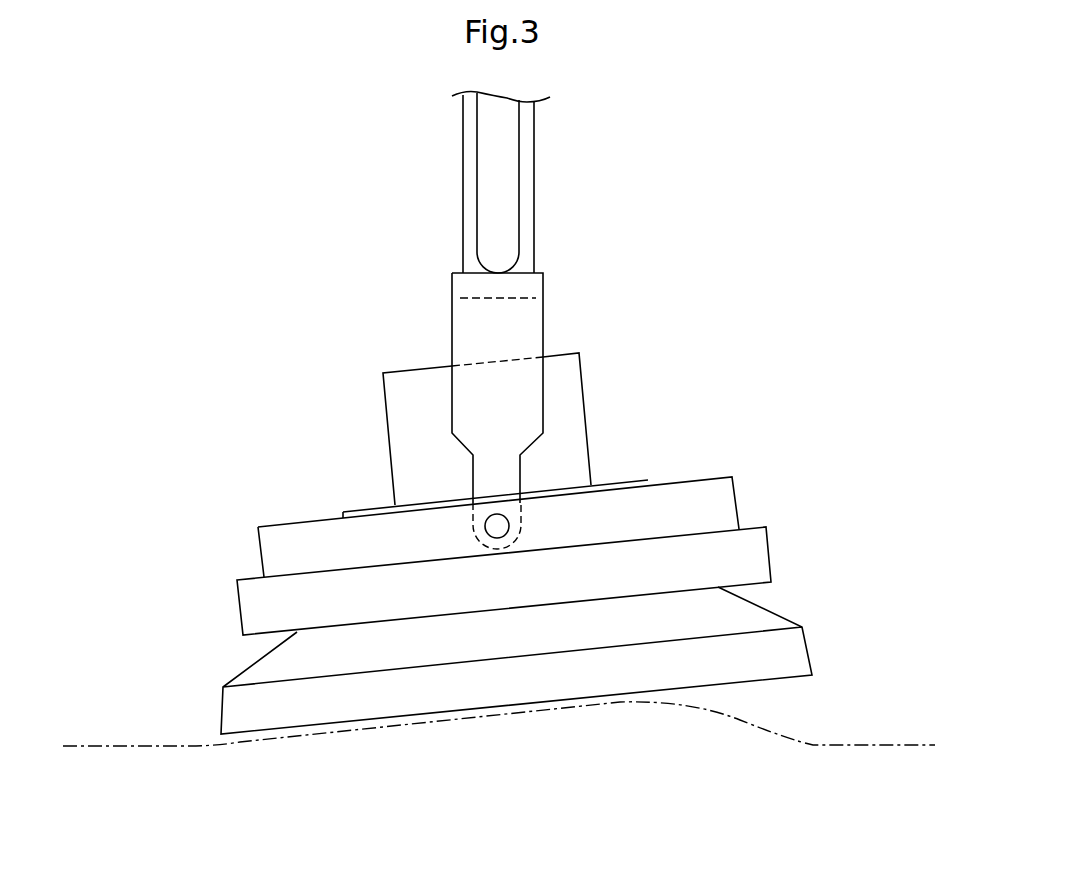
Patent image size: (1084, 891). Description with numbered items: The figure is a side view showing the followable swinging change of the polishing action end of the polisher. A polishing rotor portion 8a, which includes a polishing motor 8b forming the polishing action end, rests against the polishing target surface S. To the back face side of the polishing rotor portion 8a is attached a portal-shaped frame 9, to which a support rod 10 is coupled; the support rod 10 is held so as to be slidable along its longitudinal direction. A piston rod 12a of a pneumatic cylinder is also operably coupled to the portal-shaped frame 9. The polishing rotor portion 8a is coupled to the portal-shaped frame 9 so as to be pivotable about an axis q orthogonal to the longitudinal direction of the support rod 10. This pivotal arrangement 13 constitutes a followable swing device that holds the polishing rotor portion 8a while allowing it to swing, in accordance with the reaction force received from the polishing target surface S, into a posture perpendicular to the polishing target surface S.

The support rod 10 is at (533, 208).
The piston rod 12a is at (484, 164).
The portal-shaped frame 9 is at (477, 337).
The pivotal arrangement 13 is at (446, 481).
The axis q is at (500, 520).
The polishing rotor portion 8a is at (795, 457).
The polishing motor 8b is at (343, 703).
The polishing target surface S is at (877, 745).